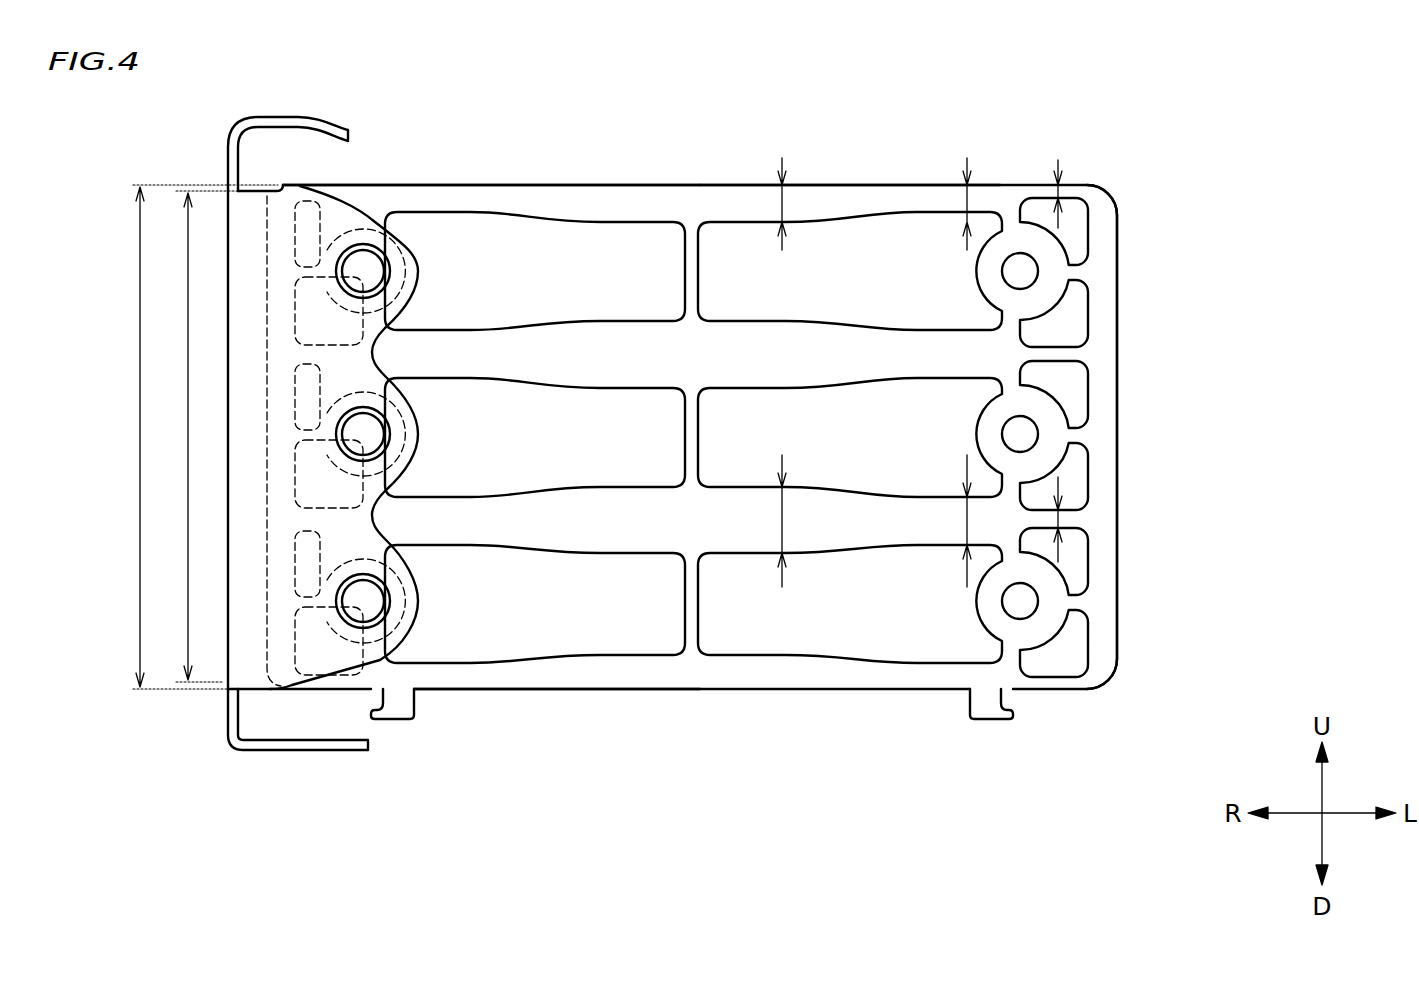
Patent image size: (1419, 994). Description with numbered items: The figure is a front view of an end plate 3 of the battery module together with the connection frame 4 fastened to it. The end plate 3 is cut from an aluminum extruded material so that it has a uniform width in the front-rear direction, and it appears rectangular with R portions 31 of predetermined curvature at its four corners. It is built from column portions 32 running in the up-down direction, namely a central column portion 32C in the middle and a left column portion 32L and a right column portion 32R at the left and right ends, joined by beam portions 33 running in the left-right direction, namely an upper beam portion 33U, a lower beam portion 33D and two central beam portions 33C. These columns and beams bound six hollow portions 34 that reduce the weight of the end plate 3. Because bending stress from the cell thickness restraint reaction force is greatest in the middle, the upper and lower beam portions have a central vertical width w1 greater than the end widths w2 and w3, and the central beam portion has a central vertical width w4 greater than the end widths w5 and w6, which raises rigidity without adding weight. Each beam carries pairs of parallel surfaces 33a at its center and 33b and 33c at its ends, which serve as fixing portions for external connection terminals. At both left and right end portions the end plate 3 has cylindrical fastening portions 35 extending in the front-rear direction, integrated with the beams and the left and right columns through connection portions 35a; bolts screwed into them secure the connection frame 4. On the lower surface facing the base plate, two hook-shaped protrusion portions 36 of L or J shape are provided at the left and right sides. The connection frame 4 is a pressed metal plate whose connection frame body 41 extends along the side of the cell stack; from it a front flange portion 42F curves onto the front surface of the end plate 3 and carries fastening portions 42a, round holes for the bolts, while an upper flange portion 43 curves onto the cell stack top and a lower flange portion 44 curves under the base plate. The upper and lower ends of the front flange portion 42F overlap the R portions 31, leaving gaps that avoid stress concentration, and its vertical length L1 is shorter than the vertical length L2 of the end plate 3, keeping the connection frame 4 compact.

The end plate 3 is at (612, 184).
The connection frame 4 is at (227, 583).
The connection frame body 41 is at (74, 649).
The R portion 31 is at (227, 150).
The column portion 32 is at (457, 489).
The right column portion 32R is at (265, 455).
The left column portion 32L is at (1122, 522).
The central column portion 32C is at (680, 604).
The beam portion 33 is at (672, 494).
The upper beam portion 33U is at (508, 184).
The lower beam portion 33D is at (494, 692).
The central beam portion 33C is at (482, 328).
The parallel surface 33a is at (748, 205).
The parallel surface 33b is at (948, 205).
The parallel surface 33c is at (1082, 214).
The hollow portion 34 is at (629, 283).
The fastening portion 35 is at (1042, 297).
The connection portion 35a is at (1044, 594).
The protrusion portion 36 is at (393, 721).
The front flange portion 42F is at (347, 210).
The fastening portion 42a is at (378, 272).
The upper flange portion 43 is at (322, 122).
The lower flange portion 44 is at (325, 752).
The vertical width w1 is at (787, 202).
The vertical width w2 is at (972, 202).
The vertical width w3 is at (1058, 176).
The vertical width w4 is at (783, 523).
The vertical width w5 is at (967, 522).
The vertical width w6 is at (1080, 518).
The vertical length L1 is at (195, 436).
The vertical length L2 is at (190, 437).